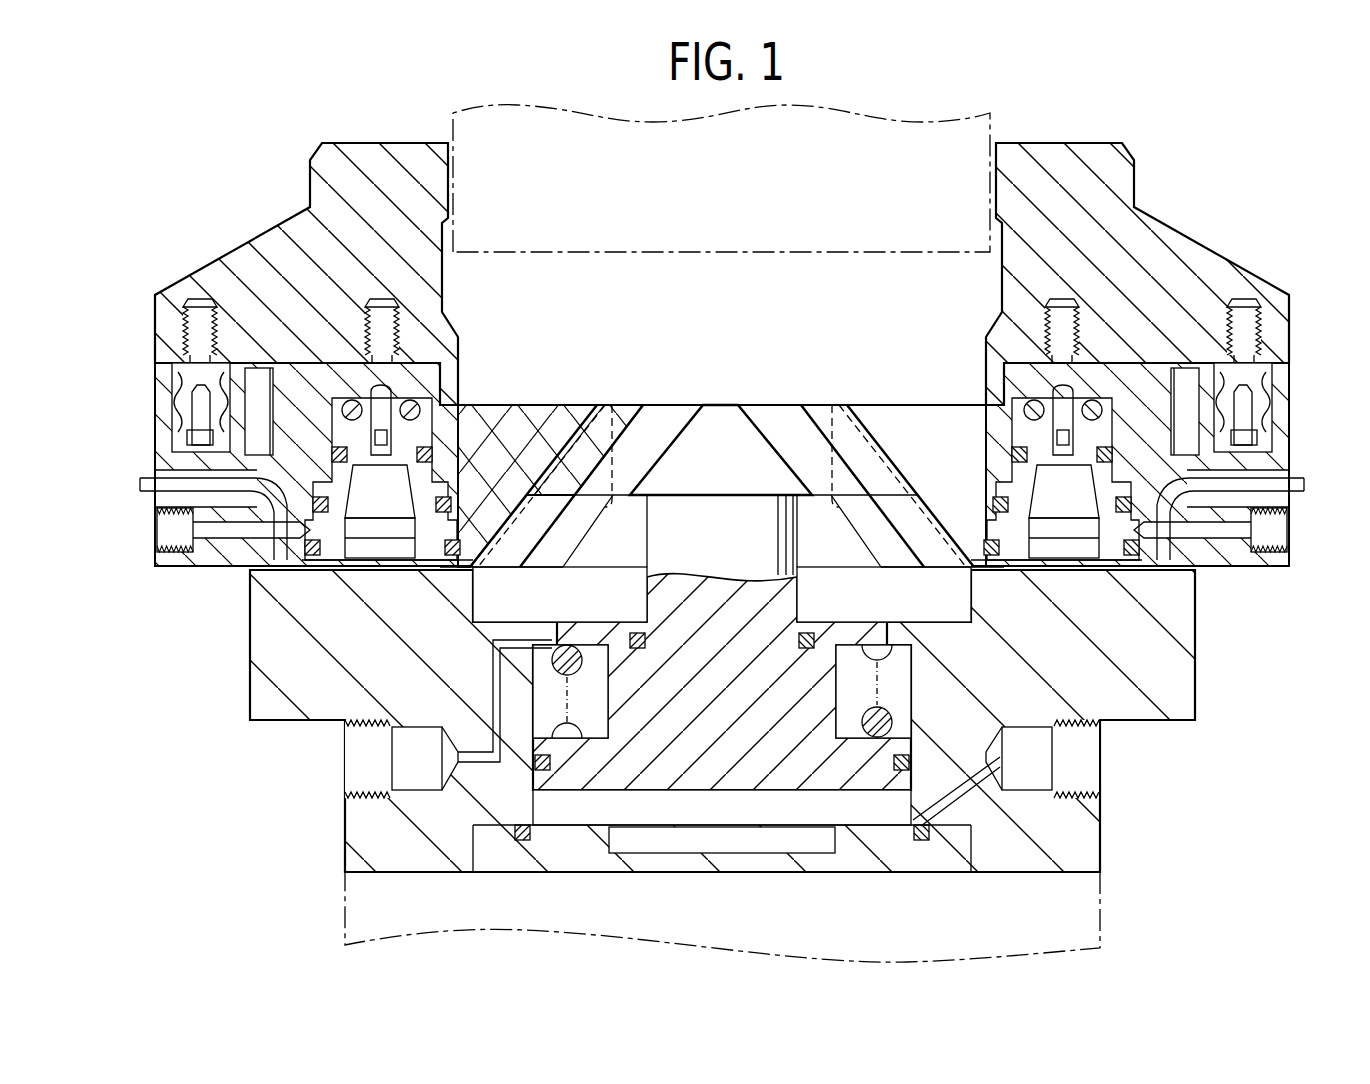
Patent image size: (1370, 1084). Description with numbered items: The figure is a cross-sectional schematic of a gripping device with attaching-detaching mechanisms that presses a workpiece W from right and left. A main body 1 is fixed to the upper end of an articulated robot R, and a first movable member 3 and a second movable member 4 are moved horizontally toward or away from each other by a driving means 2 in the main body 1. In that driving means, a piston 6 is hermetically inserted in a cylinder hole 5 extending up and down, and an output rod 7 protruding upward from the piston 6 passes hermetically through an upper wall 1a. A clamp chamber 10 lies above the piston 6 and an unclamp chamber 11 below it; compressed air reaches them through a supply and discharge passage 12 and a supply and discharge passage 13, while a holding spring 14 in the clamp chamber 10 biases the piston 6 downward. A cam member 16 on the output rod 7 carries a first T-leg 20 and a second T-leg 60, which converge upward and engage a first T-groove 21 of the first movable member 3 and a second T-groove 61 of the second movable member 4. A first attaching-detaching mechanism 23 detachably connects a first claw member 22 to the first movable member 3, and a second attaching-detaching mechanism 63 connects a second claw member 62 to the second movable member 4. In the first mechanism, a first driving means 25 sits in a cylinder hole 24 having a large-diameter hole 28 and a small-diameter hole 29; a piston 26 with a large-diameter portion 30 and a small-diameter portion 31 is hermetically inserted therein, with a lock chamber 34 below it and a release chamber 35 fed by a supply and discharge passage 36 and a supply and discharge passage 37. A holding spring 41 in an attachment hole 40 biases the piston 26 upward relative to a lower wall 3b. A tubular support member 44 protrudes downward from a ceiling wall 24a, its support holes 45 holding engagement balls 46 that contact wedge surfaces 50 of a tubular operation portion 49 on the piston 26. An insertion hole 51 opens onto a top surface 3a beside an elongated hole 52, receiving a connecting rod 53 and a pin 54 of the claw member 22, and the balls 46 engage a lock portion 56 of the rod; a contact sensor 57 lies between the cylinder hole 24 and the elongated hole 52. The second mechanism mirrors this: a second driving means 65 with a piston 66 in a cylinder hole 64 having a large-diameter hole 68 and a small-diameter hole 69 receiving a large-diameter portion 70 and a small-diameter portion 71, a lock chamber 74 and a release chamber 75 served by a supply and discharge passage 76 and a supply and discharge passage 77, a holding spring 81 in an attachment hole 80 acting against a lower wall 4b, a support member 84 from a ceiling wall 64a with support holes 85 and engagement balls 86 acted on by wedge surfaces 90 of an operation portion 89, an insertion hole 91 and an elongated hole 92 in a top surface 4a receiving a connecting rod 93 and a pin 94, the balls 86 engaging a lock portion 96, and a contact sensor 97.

The main body 1 is at (1214, 654).
The upper wall 1a is at (604, 625).
The driving means 2 is at (824, 808).
The first movable member 3 is at (890, 417).
The top surface 3a is at (1150, 360).
The lower wall 3b is at (1133, 577).
The second movable member 4 is at (563, 412).
The top surface 4a is at (283, 370).
The lower wall 4b is at (323, 558).
The cylinder hole 5 is at (911, 793).
The piston 6 is at (757, 763).
The output rod 7 is at (758, 562).
The clamp chamber 10 is at (898, 670).
The unclamp chamber 11 is at (682, 810).
The supply and discharge passage 12 is at (493, 687).
The supply and discharge passage 13 is at (982, 805).
The holding spring 14 is at (895, 722).
The cam member 16 is at (717, 430).
The first T-leg 20 is at (822, 413).
The first T-groove 21 is at (836, 400).
The first claw member 22 is at (1002, 223).
The first attaching-detaching mechanism 23 is at (1033, 383).
The cylinder hole 24 is at (1023, 397).
The ceiling wall 24a is at (1100, 383).
The first driving means 25 is at (1110, 570).
The piston 26 is at (1005, 455).
The large-diameter hole 28 is at (980, 580).
The small-diameter hole 29 is at (1005, 470).
The large-diameter portion 30 is at (1000, 500).
The small-diameter portion 31 is at (1010, 440).
The lock chamber 34 is at (1012, 570).
The release chamber 35 is at (1005, 483).
The supply and discharge passage 36 is at (1225, 532).
The supply and discharge passage 37 is at (1207, 562).
The attachment hole 40 is at (1073, 570).
The holding spring 41 is at (1043, 577).
The support member 44 is at (1100, 463).
The support holes 45 is at (1097, 440).
The engagement balls 46 is at (1110, 387).
The operation portion 49 is at (1100, 410).
The wedge surface 50 is at (1093, 397).
The insertion hole 51 is at (1070, 373).
The elongated hole 52 is at (1267, 413).
The connecting rod 53 is at (1038, 380).
The pin 54 is at (1262, 388).
The lock portion 56 is at (1027, 387).
The contact sensor 57 is at (1181, 377).
The second T-leg 60 is at (627, 410).
The second T-groove 61 is at (612, 400).
The second claw member 62 is at (432, 228).
The second attaching-detaching mechanism 63 is at (437, 343).
The cylinder hole 64 is at (446, 390).
The ceiling wall 64a is at (363, 367).
The second driving means 65 is at (372, 525).
The piston 66 is at (440, 463).
The large-diameter hole 68 is at (470, 570).
The small-diameter hole 69 is at (430, 478).
The large-diameter portion 70 is at (453, 533).
The small-diameter portion 71 is at (432, 447).
The lock chamber 74 is at (423, 545).
The release chamber 75 is at (440, 500).
The supply and discharge passage 76 is at (183, 570).
The supply and discharge passage 77 is at (225, 535).
The attachment hole 80 is at (347, 515).
The holding spring 81 is at (393, 532).
The support member 84 is at (345, 462).
The support holes 85 is at (343, 432).
The engagement balls 86 is at (347, 377).
The operation portion 89 is at (343, 420).
The wedge surface 90 is at (340, 398).
The insertion hole 91 is at (383, 373).
The elongated hole 92 is at (176, 417).
The connecting rod 93 is at (408, 377).
The pin 94 is at (183, 385).
The lock portion 96 is at (452, 349).
The contact sensor 97 is at (256, 362).
The workpiece W is at (1000, 133).
The articulated robot R is at (1102, 930).